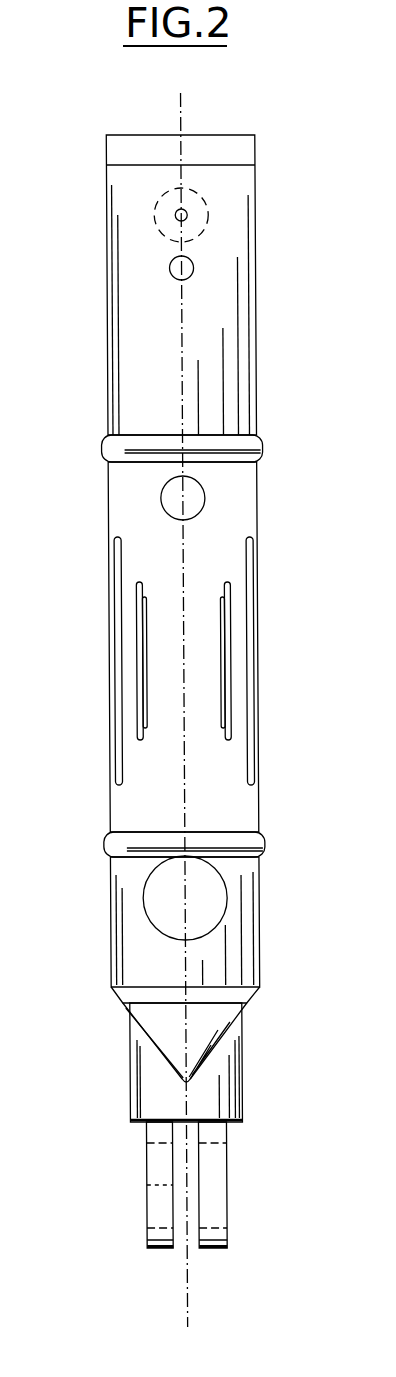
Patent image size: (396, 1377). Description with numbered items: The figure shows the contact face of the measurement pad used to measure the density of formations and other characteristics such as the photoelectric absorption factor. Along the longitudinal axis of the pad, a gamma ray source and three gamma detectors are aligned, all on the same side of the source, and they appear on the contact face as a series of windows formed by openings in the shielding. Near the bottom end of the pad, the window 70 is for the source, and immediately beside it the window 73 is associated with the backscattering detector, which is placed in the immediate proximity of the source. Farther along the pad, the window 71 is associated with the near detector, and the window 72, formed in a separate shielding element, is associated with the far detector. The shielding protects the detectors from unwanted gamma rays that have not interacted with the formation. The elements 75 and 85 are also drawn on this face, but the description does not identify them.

The window 70 is at (206, 215).
The window 71 is at (184, 502).
The window 72 is at (157, 900).
The window 73 is at (176, 271).
The tubular legs 75 is at (140, 1243).
The leg bore / dashed hidden line 85 is at (161, 1200).